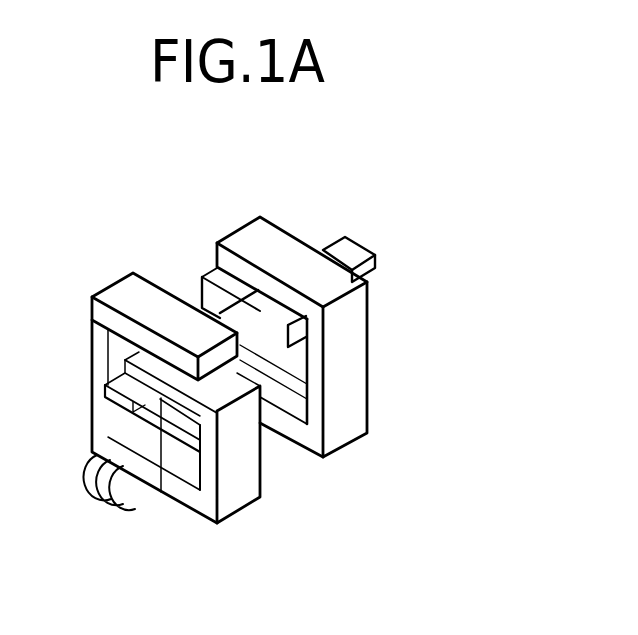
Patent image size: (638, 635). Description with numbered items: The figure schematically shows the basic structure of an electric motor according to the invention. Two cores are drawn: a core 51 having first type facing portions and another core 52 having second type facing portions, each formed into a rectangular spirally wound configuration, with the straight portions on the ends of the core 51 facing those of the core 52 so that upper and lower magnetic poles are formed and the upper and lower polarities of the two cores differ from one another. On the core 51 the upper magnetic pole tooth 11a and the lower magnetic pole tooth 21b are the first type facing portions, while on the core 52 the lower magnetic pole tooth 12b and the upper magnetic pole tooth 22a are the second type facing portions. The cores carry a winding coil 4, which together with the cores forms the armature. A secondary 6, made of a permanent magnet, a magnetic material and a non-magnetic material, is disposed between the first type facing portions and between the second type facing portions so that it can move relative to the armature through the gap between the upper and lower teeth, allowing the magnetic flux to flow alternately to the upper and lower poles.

The upper magnetic pole tooth 11a is at (144, 288).
The lower magnetic pole tooth 12b is at (262, 337).
The lower magnetic pole tooth 21b is at (170, 400).
The upper magnetic pole tooth 22a is at (267, 230).
The winding coil 4 is at (133, 502).
The secondary 6 is at (337, 248).
The core 51 is at (246, 506).
The core 52 is at (347, 443).